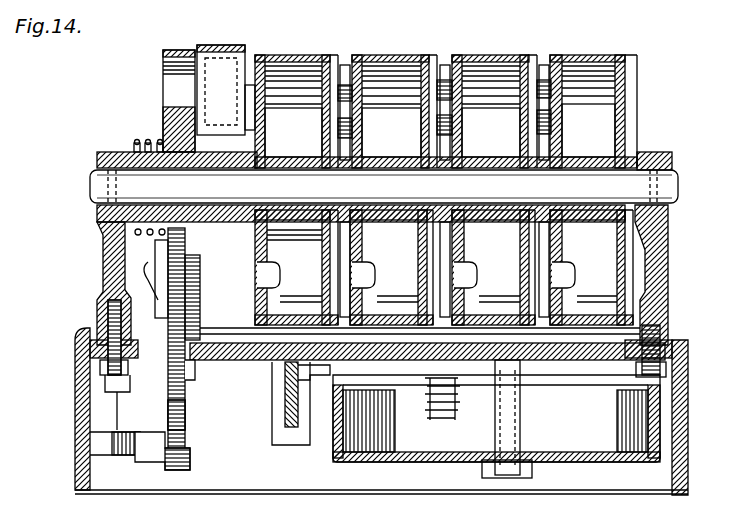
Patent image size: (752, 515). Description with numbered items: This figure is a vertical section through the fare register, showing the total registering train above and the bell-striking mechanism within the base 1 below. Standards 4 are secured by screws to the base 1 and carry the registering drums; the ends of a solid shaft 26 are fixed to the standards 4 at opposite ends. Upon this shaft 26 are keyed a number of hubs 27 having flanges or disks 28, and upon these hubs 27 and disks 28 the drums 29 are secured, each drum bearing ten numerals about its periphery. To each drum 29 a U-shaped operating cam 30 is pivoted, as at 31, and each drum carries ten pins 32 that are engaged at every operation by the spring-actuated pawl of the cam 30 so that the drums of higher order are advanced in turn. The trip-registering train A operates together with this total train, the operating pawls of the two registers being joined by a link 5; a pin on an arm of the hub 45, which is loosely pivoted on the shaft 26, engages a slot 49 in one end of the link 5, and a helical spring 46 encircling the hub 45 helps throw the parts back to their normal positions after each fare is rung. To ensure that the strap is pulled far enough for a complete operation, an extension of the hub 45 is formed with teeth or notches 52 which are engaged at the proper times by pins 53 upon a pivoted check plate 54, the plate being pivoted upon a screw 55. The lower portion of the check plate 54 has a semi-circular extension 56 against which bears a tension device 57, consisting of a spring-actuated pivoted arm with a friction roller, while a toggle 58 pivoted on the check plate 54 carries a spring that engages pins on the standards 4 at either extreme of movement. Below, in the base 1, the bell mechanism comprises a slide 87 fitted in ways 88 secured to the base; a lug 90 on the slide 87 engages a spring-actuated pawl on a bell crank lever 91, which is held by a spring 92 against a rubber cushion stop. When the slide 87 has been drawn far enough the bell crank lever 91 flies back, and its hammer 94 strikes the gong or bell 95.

The base 1 is at (381, 411).
The standards 4 is at (100, 305).
The link 5 is at (205, 105).
The solid shaft 26 is at (384, 186).
The hubs 27 is at (658, 132).
The flanges or disks 28 is at (268, 135).
The drums 29 is at (560, 62).
The U-shaped operating cam 30 is at (546, 155).
The pivot 31 is at (365, 278).
The pins 32 is at (446, 68).
The hub 45 is at (136, 140).
The helical spring 46 is at (149, 140).
The slot 49 is at (327, 60).
The teeth or notches 52 is at (200, 320).
The pins 53 is at (195, 268).
The check plate 54 is at (175, 268).
The screw 55 is at (192, 372).
The semi-circular extension 56 is at (182, 428).
The tension device 57 is at (190, 462).
The toggle 58 is at (160, 258).
The slide 87 is at (285, 408).
The ways 88 is at (288, 440).
The lug 90 is at (307, 382).
The bell crank lever 91 is at (417, 360).
The spring 92 is at (442, 411).
The hammer 94 is at (505, 405).
The gong or bell 95 is at (496, 418).
The trip-registering train A is at (367, 55).